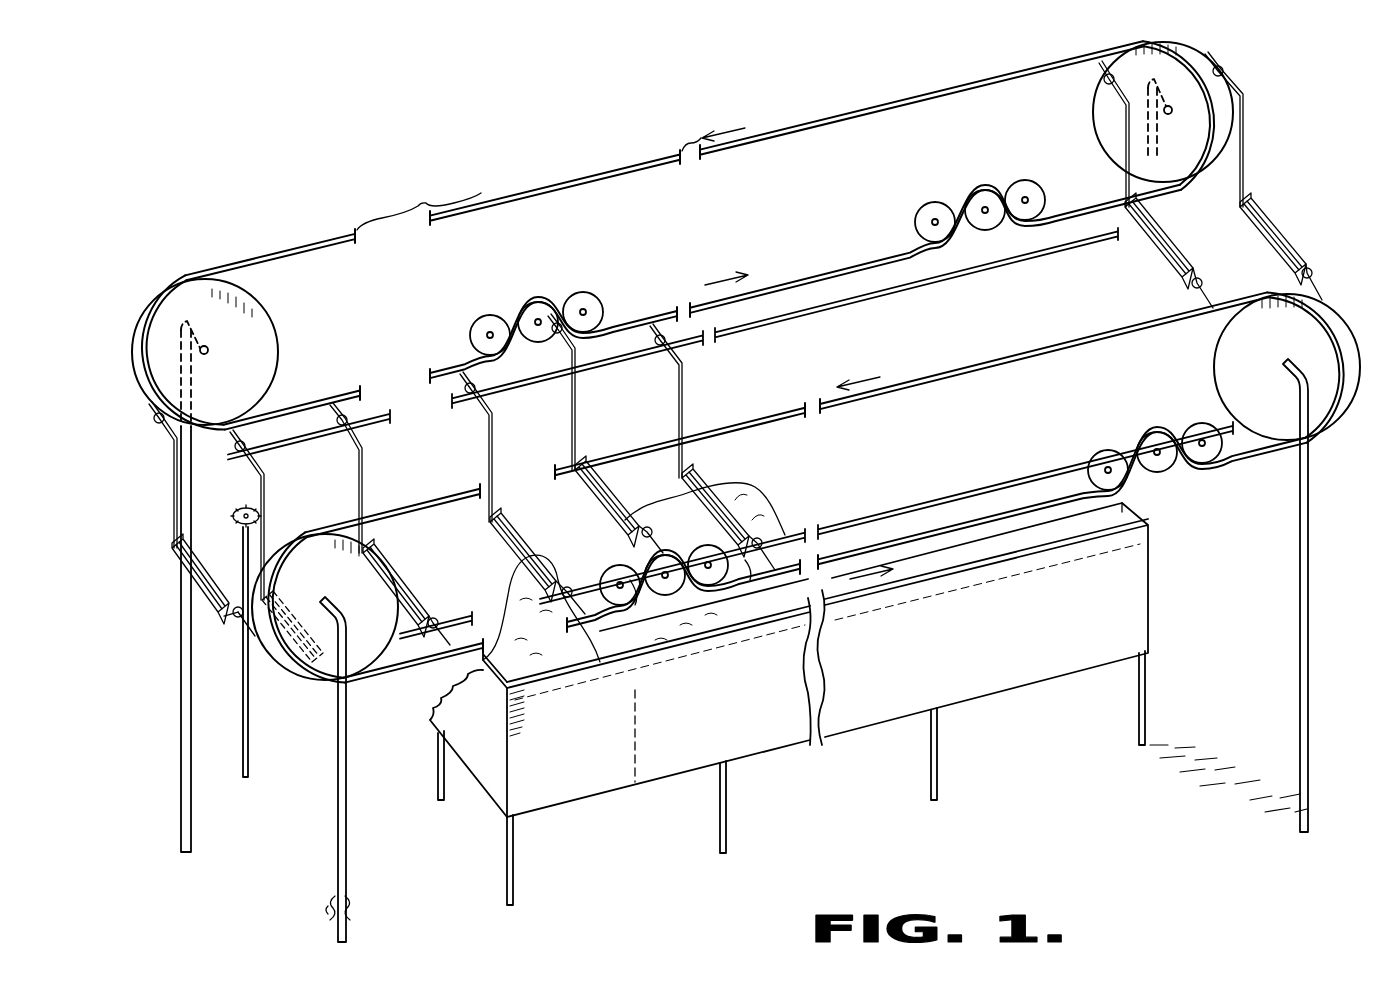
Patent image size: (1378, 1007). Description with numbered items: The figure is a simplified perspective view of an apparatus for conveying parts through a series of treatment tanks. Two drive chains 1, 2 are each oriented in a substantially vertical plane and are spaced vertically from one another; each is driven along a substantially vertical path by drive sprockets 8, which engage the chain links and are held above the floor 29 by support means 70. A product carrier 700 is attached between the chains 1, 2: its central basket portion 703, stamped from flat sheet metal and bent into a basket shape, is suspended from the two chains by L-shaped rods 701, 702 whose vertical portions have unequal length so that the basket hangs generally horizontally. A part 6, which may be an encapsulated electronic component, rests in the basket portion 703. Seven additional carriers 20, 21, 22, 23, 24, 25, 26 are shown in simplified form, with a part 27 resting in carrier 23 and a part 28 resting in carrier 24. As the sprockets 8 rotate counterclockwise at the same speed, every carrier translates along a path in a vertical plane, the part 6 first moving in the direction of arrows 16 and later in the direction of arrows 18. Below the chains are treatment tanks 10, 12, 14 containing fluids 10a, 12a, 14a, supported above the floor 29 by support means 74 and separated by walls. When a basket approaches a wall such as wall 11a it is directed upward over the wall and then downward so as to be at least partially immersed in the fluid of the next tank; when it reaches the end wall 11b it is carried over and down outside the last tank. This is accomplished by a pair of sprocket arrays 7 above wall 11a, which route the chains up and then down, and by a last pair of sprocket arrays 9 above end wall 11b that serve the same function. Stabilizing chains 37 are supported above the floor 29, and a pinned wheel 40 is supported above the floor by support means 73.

The drive chain 1 is at (570, 190).
The drive chain 2 is at (778, 414).
The part 6 is at (173, 577).
The sprocket array 7 is at (560, 308).
The drive sprocket 8 is at (195, 288).
The sprocket array 9 is at (1022, 185).
The treatment tank 10 is at (620, 698).
The fluid 10a is at (598, 752).
The wall 11a is at (648, 782).
The end wall 11b is at (1148, 517).
The treatment tank 12 is at (757, 739).
The fluid 12a is at (748, 724).
The treatment tank 14 is at (982, 624).
The fluid 14a is at (1012, 659).
The arrows 16 is at (799, 423).
The arrows 18 is at (791, 243).
The carrier 20 is at (258, 472).
The carrier 21 is at (360, 462).
The carrier 22 is at (486, 430).
The carrier 23 is at (572, 403).
The carrier 24 is at (678, 388).
The carrier 25 is at (1246, 182).
The carrier 26 is at (1124, 162).
The part 27 is at (598, 505).
The part 28 is at (748, 499).
The floor 29 is at (1242, 789).
The stabilizing chain 37 is at (1010, 254).
The pinned wheel 40 is at (236, 525).
The support means 70 is at (180, 348).
The support means 73 is at (243, 730).
The support means 74 is at (438, 795).
The product carrier 700 is at (168, 588).
The L-shaped rod 701 is at (172, 493).
The L-shaped rod 702 is at (225, 628).
The basket portion 703 is at (230, 612).